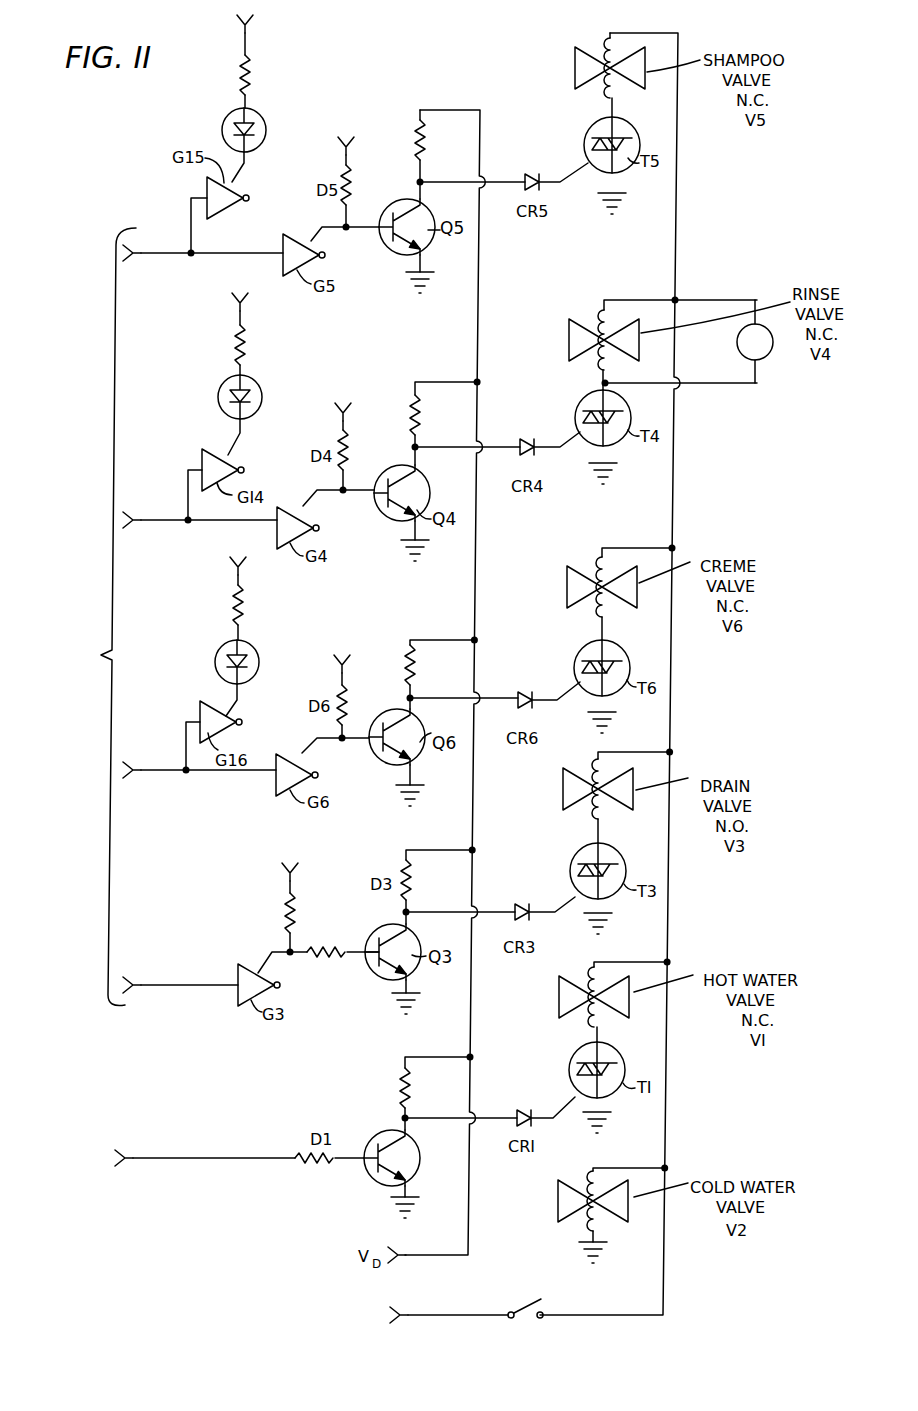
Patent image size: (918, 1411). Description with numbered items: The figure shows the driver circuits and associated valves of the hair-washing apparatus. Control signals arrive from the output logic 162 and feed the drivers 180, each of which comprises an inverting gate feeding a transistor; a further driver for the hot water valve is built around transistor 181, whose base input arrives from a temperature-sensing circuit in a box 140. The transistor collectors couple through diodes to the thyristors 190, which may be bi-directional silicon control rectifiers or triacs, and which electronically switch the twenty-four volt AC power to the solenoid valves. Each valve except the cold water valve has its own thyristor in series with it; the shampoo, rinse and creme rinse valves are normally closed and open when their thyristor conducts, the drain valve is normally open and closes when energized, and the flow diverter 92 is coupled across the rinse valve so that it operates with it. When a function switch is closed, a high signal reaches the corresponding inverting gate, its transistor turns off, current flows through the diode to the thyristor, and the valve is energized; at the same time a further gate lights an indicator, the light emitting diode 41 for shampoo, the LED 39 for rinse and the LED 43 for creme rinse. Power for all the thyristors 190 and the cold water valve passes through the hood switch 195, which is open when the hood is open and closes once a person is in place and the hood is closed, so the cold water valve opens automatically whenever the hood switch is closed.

The drivers 180 is at (321, 62).
The indicator 41 is at (264, 128).
The LED 39 is at (259, 386).
The LED 43 is at (254, 650).
The thyristors 190 is at (580, 445).
The flow diverter 92 is at (762, 352).
The transistor 181 is at (410, 1160).
The hood switch 195 is at (522, 1320).
The output logic 162 is at (74, 617).
The box (FIG. 9) 140 is at (157, 1156).